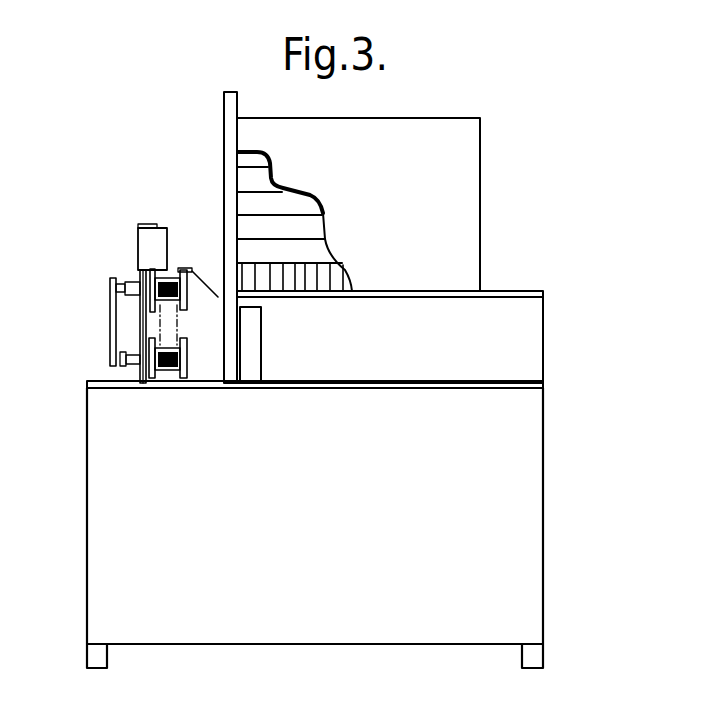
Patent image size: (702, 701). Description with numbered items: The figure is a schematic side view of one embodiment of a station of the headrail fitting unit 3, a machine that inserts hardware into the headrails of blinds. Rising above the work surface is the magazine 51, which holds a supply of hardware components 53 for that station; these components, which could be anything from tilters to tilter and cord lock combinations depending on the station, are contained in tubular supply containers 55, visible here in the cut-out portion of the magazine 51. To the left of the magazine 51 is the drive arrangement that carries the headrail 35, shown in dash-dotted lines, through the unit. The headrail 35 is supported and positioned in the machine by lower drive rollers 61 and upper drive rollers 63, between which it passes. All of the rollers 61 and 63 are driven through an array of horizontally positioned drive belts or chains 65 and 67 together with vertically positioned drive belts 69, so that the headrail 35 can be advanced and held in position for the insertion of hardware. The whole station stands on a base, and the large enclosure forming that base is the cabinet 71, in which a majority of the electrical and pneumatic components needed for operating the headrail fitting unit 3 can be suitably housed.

The headrail fitting unit 3 is at (397, 111).
The headrail 35 is at (177, 322).
The magazine 51 is at (429, 204).
The hardware components 53 is at (288, 280).
The tubular supply containers 55 is at (264, 203).
The lower drive rollers 61 is at (170, 364).
The upper drive rollers 63 is at (170, 287).
The horizontally positioned drive belts or chains 65 is at (131, 366).
The horizontally positioned drive belts or chains 67 is at (126, 370).
The vertically positioned drive belts 69 is at (110, 310).
The cabinet 71 is at (107, 563).